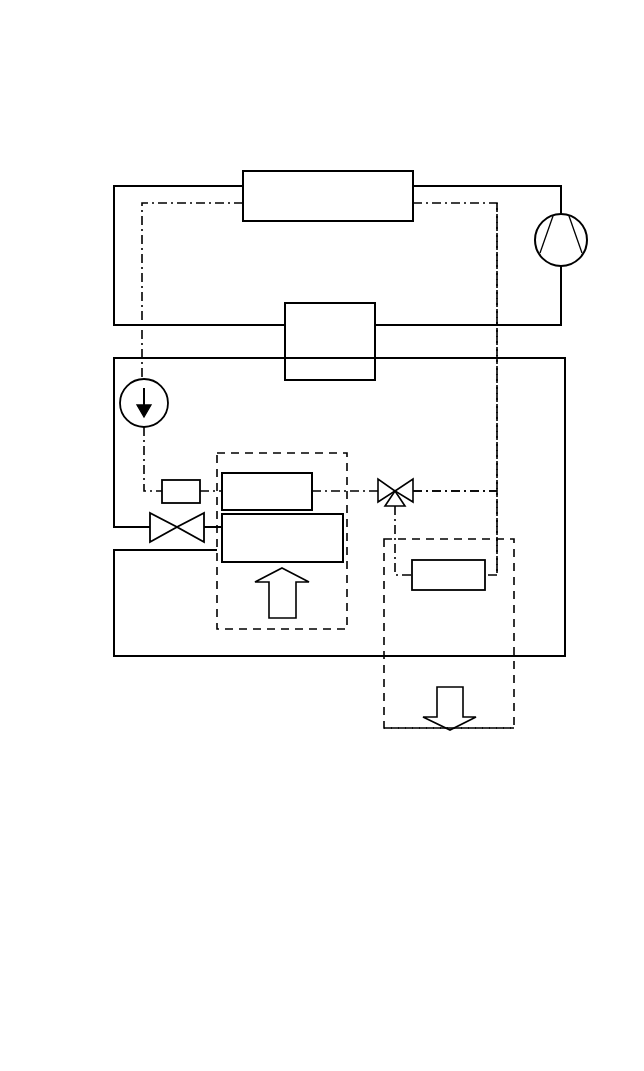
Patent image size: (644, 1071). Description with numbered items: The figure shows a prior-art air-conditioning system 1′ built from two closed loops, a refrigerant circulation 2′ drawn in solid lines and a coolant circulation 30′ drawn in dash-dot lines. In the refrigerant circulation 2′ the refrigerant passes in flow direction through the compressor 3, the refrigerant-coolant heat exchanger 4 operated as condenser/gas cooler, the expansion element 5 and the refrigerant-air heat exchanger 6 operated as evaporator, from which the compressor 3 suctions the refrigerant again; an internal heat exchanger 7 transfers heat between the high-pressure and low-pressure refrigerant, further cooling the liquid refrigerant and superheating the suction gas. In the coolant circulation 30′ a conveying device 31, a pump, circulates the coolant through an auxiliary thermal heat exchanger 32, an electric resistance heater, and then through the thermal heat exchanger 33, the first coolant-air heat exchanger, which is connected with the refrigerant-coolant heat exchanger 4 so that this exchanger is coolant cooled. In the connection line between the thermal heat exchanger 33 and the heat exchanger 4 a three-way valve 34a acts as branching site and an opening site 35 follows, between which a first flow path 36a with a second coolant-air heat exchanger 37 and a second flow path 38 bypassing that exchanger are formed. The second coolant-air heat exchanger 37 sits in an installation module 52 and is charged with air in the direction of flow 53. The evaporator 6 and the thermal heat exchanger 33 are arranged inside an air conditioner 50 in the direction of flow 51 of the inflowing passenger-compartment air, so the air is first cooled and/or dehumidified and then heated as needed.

The air-conditioning system 1′ is at (538, 111).
The refrigerant circulation 2′ is at (92, 286).
The coolant circulation 30′ is at (163, 286).
The compressor 3 is at (562, 226).
The refrigerant-coolant heat exchanger 4 is at (328, 196).
The internal heat exchanger 7 is at (330, 341).
The refrigerant-air heat exchanger 6 is at (339, 507).
The conveying device 31 is at (153, 408).
The auxiliary thermal heat exchanger 32 is at (178, 492).
The expansion element 5 is at (155, 532).
The air conditioner 50 is at (303, 453).
The thermal heat exchanger 33 is at (267, 491).
The direction of flow 51 is at (288, 608).
The three-way valve 34a is at (398, 480).
The second flow path 38 is at (451, 489).
The opening site 35 is at (498, 490).
The first flow path 36a is at (498, 538).
The second coolant-air heat exchanger 37 is at (448, 575).
The installation module 52 is at (500, 729).
The direction of flow 53 is at (442, 725).